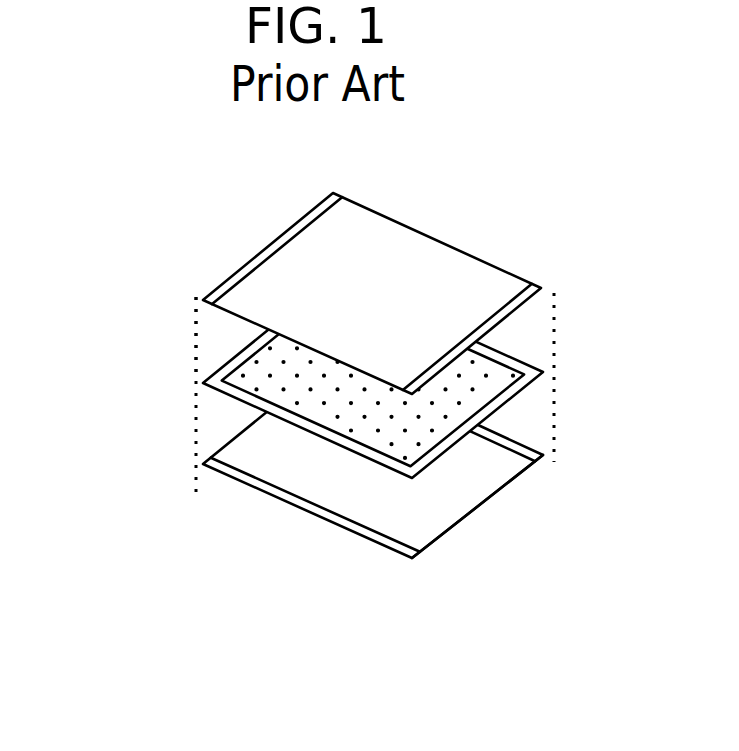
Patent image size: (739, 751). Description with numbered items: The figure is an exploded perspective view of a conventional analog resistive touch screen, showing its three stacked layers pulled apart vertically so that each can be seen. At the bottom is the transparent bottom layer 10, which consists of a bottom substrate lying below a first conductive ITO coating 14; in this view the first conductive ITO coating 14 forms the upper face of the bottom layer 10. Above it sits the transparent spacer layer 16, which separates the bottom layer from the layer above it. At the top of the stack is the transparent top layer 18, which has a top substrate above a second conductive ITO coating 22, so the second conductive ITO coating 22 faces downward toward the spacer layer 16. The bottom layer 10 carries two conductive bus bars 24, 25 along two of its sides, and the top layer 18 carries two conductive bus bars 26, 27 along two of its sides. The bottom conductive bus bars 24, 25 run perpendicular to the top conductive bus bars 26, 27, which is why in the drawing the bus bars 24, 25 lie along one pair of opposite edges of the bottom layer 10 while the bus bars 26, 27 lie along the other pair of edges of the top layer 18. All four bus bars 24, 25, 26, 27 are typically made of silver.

The transparent bottom layer 10 is at (172, 476).
The first conductive ITO coating 14 is at (290, 456).
The transparent spacer layer 16 is at (240, 353).
The transparent top layer 18 is at (166, 296).
The second conductive ITO coating 22 is at (270, 292).
The conductive bus bar 24 is at (326, 523).
The conductive bus bar 25 is at (538, 444).
The conductive bus bar 26 is at (512, 314).
The conductive bus bar 27 is at (308, 214).